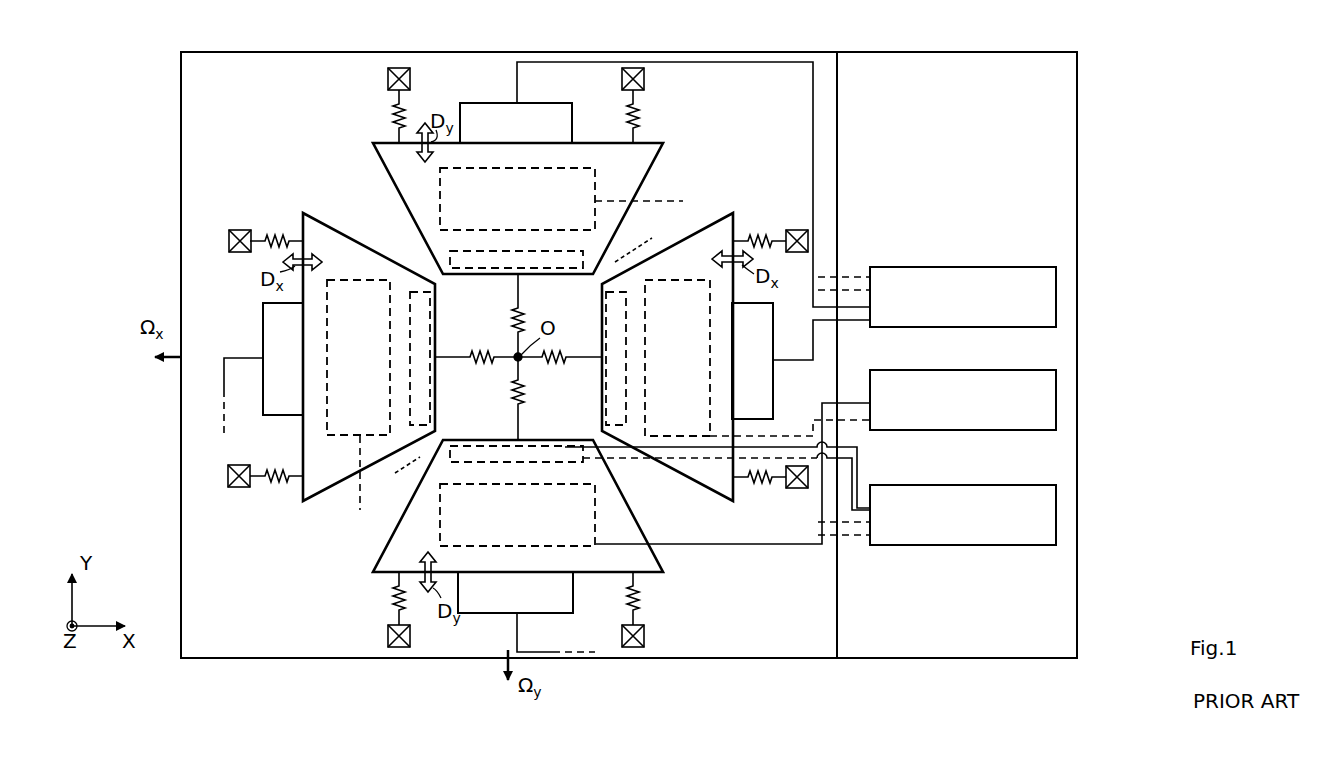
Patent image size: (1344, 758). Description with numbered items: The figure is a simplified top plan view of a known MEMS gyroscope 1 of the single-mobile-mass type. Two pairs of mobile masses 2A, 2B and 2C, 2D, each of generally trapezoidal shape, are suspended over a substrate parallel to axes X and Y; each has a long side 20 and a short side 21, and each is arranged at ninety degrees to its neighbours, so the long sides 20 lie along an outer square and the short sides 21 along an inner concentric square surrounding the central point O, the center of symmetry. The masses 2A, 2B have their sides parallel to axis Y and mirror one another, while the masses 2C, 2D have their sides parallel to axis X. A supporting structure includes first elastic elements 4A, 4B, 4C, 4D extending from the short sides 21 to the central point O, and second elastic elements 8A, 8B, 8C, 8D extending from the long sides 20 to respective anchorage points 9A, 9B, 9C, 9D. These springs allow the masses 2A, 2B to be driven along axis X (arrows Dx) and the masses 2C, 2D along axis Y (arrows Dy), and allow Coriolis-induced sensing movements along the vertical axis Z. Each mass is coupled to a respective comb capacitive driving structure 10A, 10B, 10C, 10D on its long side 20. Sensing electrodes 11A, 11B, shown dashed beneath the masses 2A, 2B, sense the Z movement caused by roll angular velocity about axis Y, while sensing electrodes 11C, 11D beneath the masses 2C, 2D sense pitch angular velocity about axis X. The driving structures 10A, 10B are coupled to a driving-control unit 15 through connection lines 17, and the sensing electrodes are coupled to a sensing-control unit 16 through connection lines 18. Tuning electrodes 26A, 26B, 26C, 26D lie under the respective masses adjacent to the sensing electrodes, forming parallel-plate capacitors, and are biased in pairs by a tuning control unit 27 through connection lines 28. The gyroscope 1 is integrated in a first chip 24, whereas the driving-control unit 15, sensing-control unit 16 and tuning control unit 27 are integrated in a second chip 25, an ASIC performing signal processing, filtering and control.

The gyroscope 1 is at (130, 150).
The mobile mass 2A is at (303, 216).
The mobile mass 2B is at (683, 245).
The mobile mass 2C is at (652, 160).
The mobile mass 2D is at (623, 517).
The first elastic element 4A is at (480, 366).
The first elastic element 4B is at (546, 362).
The first elastic element 4C is at (514, 328).
The first elastic element 4D is at (513, 388).
The second elastic element 8A is at (272, 235).
The second elastic element 8B is at (762, 236).
The second elastic element 8C is at (392, 116).
The second elastic element 8D is at (395, 597).
The anchorage point 9A is at (230, 232).
The anchorage point 9B is at (797, 230).
The anchorage point 9C is at (390, 70).
The anchorage point 9D is at (388, 638).
The driving structure 10A is at (263, 345).
The driving structure 10B is at (836, 378).
The driving structure 10C is at (476, 103).
The driving structure 10D is at (503, 613).
The sensing electrode 11A is at (358, 357).
The sensing electrode 11B is at (677, 358).
The sensing electrode 11C is at (517, 199).
The sensing electrode 11D is at (517, 515).
The driving-control unit 15 is at (930, 267).
The sensing-control unit 16 is at (985, 376).
The connection line 17 is at (843, 317).
The connection line 18 is at (640, 200).
The long side 20 is at (653, 141).
The short side 21 is at (456, 282).
The first chip 24 is at (190, 77).
The second chip 25 is at (1072, 152).
The tuning electrode 26A is at (415, 292).
The tuning electrode 26B is at (608, 310).
The tuning electrode 26C is at (450, 253).
The tuning electrode 26D is at (577, 462).
The tuning control unit 27 is at (998, 490).
The connection line 28 is at (597, 263).